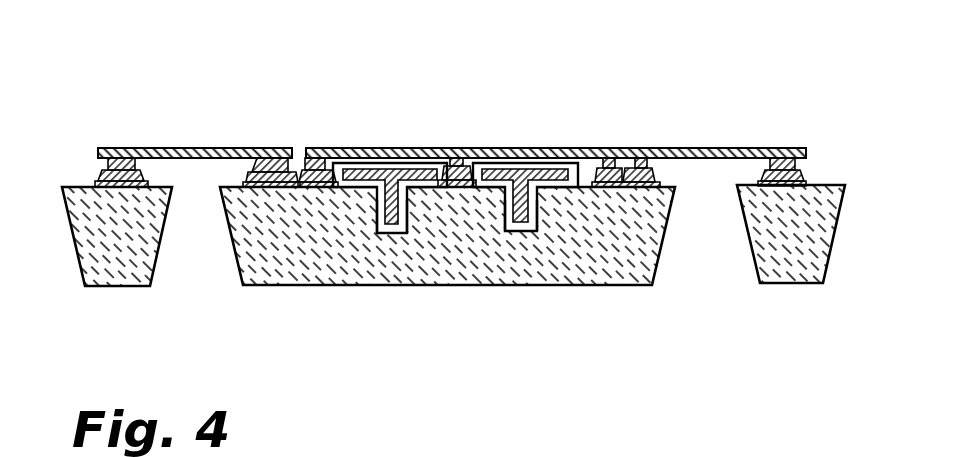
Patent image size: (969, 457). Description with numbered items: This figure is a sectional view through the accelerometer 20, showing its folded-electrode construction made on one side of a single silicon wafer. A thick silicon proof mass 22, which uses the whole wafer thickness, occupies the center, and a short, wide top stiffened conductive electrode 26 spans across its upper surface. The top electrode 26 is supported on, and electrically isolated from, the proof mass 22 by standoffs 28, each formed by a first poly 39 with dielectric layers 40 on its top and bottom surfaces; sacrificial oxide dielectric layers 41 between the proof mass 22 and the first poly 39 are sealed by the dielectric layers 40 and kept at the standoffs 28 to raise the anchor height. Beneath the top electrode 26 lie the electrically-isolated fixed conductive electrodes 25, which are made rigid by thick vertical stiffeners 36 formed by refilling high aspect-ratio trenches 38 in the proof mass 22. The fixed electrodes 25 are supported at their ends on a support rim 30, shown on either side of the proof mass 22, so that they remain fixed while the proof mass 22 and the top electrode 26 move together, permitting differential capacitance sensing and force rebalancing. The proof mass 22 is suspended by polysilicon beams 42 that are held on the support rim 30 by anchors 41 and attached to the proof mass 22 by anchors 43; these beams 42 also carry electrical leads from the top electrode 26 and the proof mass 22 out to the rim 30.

The accelerometer 20 is at (670, 58).
The proof mass 22 is at (432, 230).
The fixed conductive electrodes 25 is at (347, 188).
The top stiffened conductive electrode 26 is at (425, 148).
The standoffs 28 is at (242, 192).
The support rim 30 is at (80, 256).
The vertical stiffeners 36 is at (392, 214).
The trenches 38 is at (378, 228).
The first poly 39 is at (346, 148).
The dielectric layers 40 is at (283, 148).
The anchors 41 is at (100, 174).
The polysilicon beams 42 is at (225, 148).
The anchors 43 is at (223, 192).